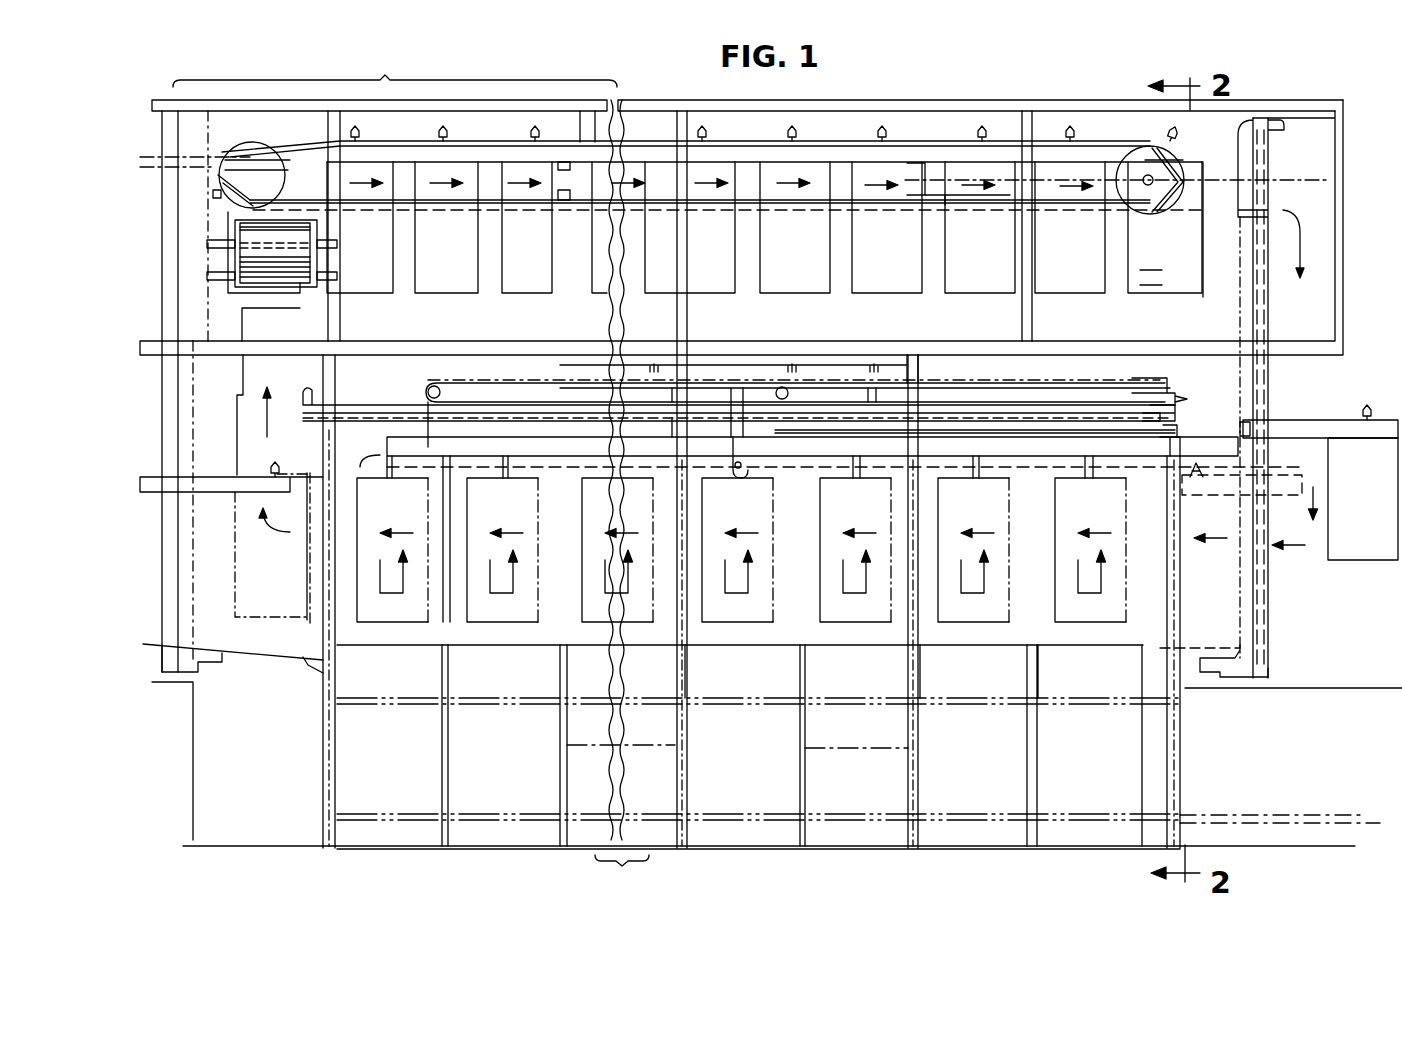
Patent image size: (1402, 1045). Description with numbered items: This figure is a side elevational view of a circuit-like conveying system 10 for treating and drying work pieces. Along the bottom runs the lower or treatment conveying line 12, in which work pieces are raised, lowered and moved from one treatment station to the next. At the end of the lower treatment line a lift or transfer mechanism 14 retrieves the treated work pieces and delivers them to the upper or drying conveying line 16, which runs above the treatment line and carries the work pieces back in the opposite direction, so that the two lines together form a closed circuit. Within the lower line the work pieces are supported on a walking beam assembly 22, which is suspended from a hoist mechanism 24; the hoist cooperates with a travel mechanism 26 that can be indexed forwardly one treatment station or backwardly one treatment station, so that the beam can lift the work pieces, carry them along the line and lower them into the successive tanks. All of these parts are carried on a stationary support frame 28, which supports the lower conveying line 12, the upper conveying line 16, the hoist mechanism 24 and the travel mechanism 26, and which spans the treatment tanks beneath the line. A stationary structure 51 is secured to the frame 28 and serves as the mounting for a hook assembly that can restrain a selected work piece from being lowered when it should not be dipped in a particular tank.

The circuit-like conveying system 10 is at (1362, 128).
The lower treatment conveying line 12 is at (790, 860).
The lift or transfer mechanism 14 is at (268, 762).
The upper drying conveying line 16 is at (970, 94).
The walking beam assembly 22 is at (1232, 462).
The hoist mechanism 24 is at (1190, 384).
The travel mechanism 26 is at (1182, 430).
The stationary support frame 28 is at (1267, 660).
The stationary structure 51 is at (766, 378).